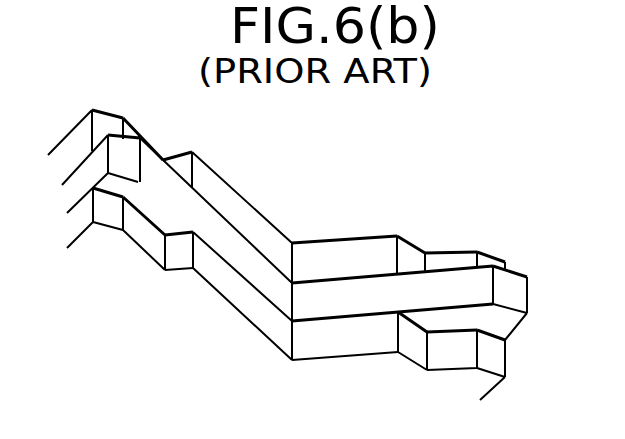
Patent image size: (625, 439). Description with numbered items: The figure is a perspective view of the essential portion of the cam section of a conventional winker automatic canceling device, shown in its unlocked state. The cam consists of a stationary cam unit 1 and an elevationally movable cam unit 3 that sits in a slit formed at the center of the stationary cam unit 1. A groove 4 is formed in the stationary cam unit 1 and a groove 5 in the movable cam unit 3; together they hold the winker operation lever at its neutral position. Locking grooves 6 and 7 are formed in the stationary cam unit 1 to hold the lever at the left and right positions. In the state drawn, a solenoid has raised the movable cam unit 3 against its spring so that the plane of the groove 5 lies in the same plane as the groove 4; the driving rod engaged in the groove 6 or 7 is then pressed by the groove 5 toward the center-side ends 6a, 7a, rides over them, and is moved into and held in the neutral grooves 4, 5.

The stationary cam unit 1 is at (489, 260).
The movable cam unit 3 is at (515, 289).
The groove 4 is at (293, 258).
The groove 5 is at (293, 297).
The locking groove 6 is at (170, 157).
The end of the center side of groove 6 6a is at (193, 168).
The locking groove 7 is at (428, 261).
The end of the center side of groove 7 7a is at (400, 251).